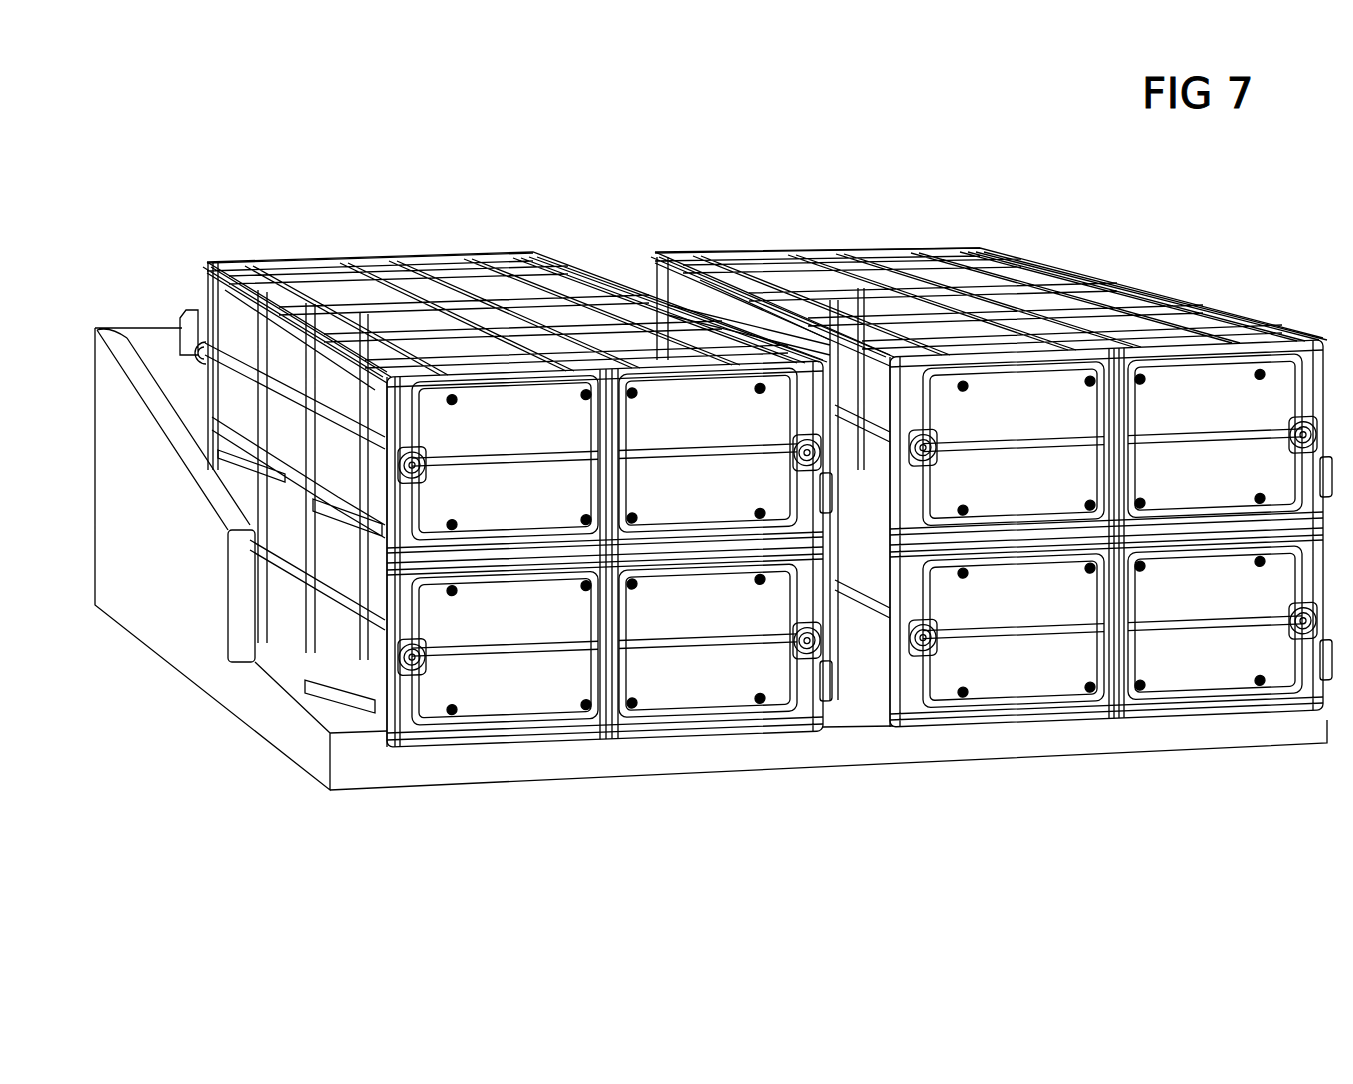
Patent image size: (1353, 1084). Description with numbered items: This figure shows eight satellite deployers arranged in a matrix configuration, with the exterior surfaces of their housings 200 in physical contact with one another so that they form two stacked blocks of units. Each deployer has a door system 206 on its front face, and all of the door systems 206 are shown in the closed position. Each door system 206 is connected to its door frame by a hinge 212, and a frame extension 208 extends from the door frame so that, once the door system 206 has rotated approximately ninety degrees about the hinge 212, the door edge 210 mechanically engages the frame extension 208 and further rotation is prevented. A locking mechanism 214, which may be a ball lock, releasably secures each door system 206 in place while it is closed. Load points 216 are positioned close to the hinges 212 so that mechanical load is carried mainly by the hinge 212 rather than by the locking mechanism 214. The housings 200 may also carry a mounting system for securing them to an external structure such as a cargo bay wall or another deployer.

The housing 200 is at (245, 320).
The door system 206 is at (945, 680).
The frame extension 208 is at (602, 737).
The door edge 210 is at (1113, 700).
The hinge 212 is at (398, 742).
The locking mechanism 214 is at (928, 448).
The load point 216 is at (762, 713).